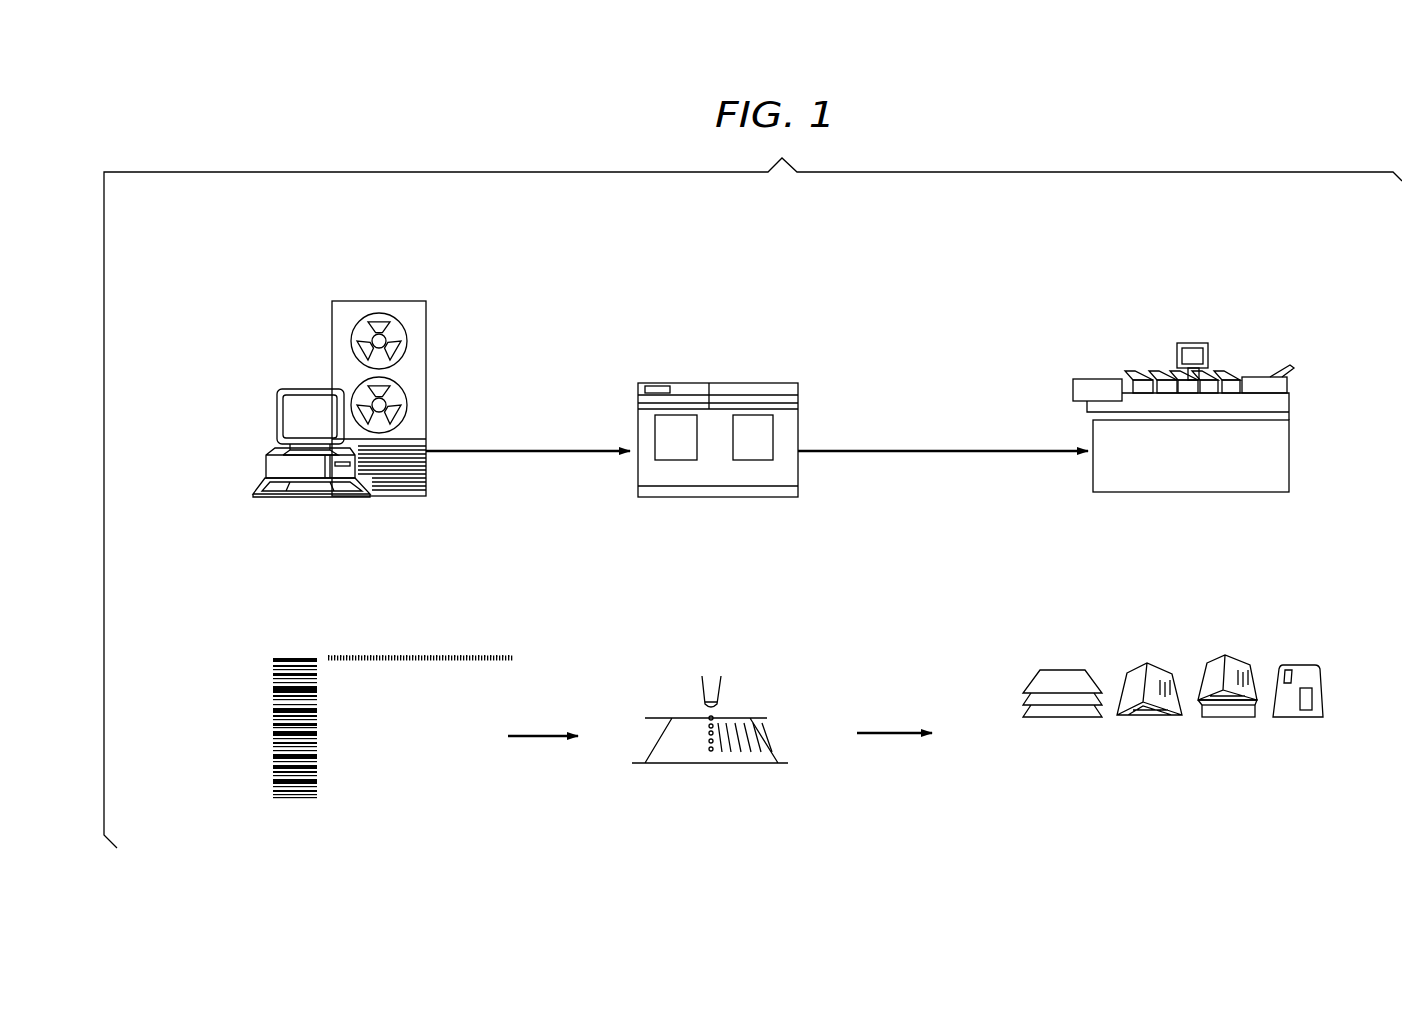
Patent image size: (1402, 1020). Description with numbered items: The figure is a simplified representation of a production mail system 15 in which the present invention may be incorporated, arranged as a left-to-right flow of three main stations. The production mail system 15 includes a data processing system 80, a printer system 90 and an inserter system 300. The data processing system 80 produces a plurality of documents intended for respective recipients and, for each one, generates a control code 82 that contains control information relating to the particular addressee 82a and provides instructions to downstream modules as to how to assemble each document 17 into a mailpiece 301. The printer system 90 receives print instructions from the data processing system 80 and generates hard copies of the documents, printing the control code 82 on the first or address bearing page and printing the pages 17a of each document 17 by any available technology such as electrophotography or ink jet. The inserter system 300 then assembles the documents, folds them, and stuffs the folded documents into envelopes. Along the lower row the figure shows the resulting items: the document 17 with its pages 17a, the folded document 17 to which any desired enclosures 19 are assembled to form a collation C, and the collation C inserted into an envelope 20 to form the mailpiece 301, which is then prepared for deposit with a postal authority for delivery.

The production mail system 15 is at (150, 105).
The data processing system 80 is at (272, 328).
The printer system 90 is at (652, 328).
The inserter system 300 is at (1082, 330).
The control code 82 is at (326, 733).
The addressee 82a is at (380, 726).
The pages 17a is at (704, 784).
The document 17 is at (1058, 737).
The enclosures 19 is at (1220, 718).
The envelope 20 is at (1308, 674).
The mailpiece 301 is at (1312, 730).
The collation C is at (1176, 640).